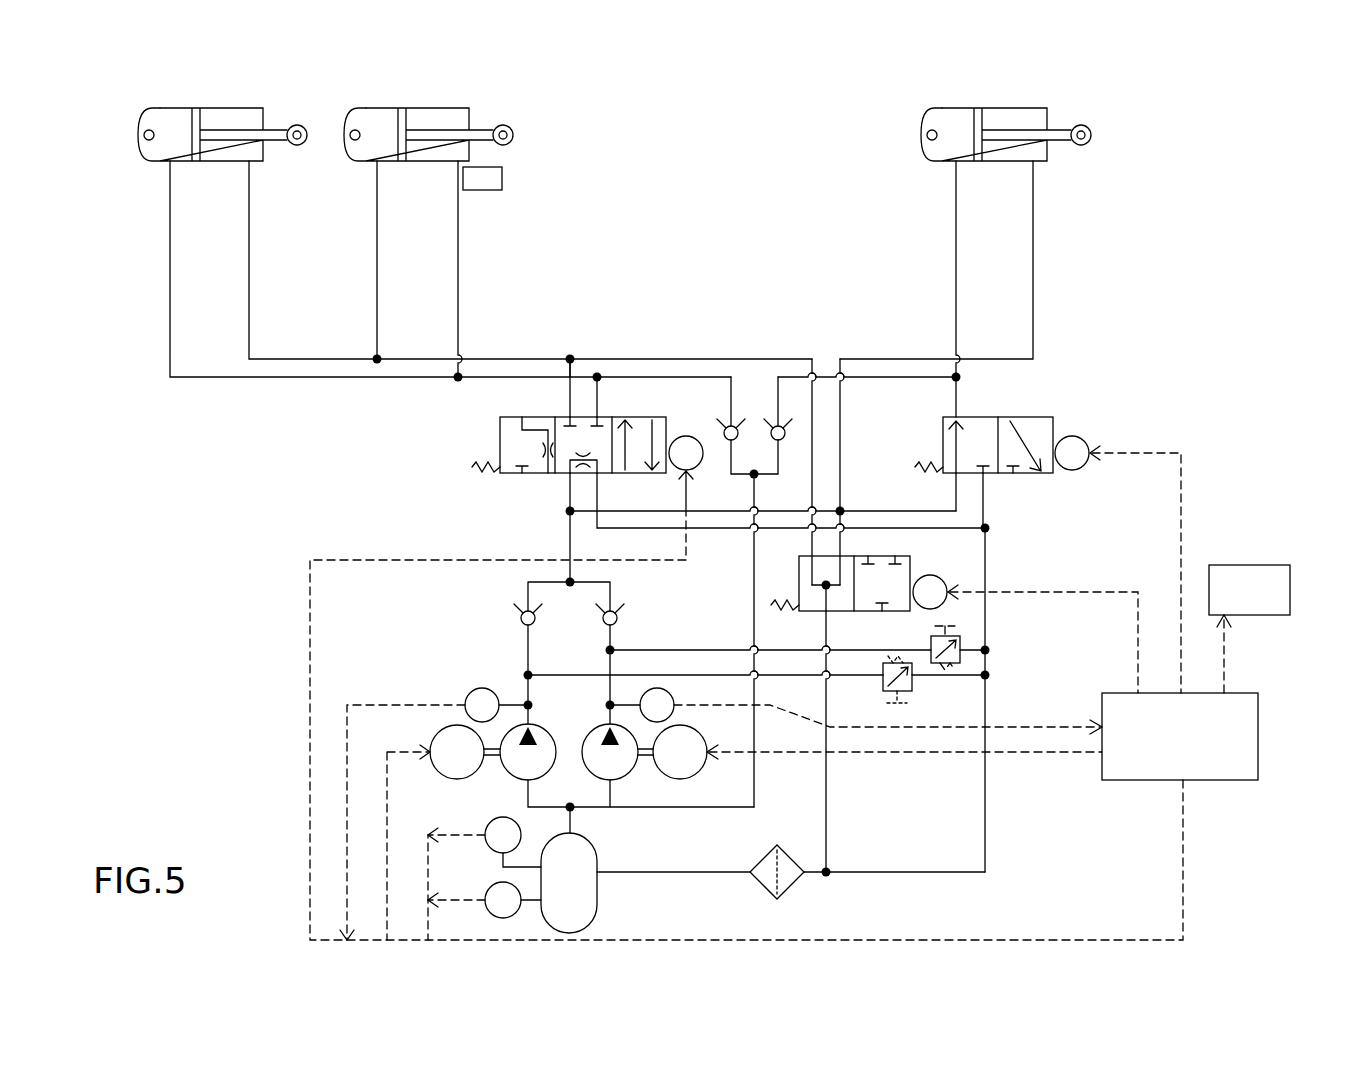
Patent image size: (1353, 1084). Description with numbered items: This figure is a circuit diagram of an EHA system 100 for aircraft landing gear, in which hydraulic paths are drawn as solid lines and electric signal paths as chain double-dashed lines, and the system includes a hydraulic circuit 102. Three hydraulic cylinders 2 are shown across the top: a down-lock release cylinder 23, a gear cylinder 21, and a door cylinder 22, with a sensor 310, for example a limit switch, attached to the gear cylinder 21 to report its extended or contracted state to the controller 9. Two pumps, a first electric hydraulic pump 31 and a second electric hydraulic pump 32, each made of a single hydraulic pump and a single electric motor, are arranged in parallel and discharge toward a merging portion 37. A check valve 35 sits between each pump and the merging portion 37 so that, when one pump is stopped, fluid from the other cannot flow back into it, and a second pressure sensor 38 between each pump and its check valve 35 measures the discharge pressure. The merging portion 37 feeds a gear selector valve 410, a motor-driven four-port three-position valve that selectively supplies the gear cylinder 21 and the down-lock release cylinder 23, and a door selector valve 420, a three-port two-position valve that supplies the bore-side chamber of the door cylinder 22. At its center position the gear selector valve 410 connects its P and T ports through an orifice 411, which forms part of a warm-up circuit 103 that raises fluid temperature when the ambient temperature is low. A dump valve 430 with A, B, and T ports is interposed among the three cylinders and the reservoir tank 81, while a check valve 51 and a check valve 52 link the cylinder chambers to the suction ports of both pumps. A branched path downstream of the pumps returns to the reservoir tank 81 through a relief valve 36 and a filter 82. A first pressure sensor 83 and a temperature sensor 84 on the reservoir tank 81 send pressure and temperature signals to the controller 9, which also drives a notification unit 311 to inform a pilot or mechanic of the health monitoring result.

The hydraulic cylinder 2 is at (150, 92).
The gear cylinder 21 is at (432, 108).
The door cylinder 22 is at (1003, 108).
The down-lock release cylinder 23 is at (215, 108).
The sensor 310 is at (488, 190).
The EHA system 100 is at (1175, 185).
The hydraulic circuit 102 is at (1065, 348).
The warm-up circuit 103 is at (995, 578).
The gear selector valve 410 is at (492, 440).
The orifice 411 is at (602, 476).
The door selector valve 420 is at (1032, 480).
The dump valve 430 is at (882, 550).
The check valve 51 is at (783, 445).
The check valve 52 is at (724, 430).
The merging portion 37 is at (565, 582).
The check valve 35 is at (520, 628).
The relief valve 36 is at (930, 648).
The second pressure sensor 38 is at (466, 695).
The first electric hydraulic pump 31 is at (538, 736).
The second electric hydraulic pump 32 is at (578, 755).
The reservoir tank 81 is at (600, 876).
The filter 82 is at (791, 898).
The first pressure sensor 83 is at (489, 826).
The temperature sensor 84 is at (491, 892).
The controller 9 is at (1260, 693).
The notification unit 311 is at (1252, 565).